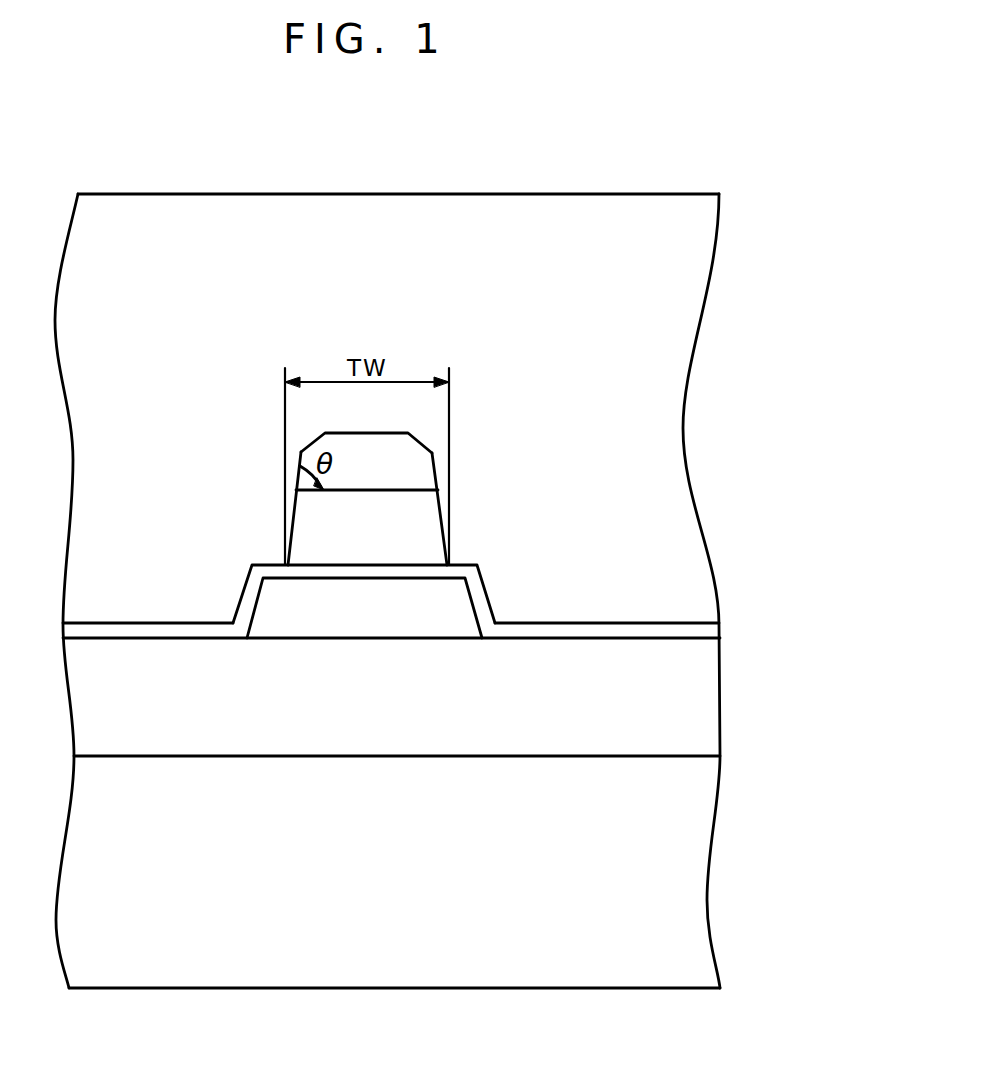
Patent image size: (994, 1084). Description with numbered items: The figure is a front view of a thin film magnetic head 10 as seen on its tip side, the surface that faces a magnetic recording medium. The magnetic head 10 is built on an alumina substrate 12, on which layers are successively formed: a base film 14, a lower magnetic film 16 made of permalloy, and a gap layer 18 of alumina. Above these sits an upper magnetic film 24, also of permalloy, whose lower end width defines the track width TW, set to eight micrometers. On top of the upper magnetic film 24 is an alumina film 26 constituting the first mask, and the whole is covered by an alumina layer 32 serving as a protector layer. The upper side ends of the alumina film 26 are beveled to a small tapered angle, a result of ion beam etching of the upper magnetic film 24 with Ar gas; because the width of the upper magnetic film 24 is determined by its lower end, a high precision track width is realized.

The thin film magnetic head 10 is at (647, 187).
The alumina substrate 12 is at (693, 845).
The base film 14 is at (708, 700).
The lower magnetic film 16 is at (427, 628).
The gap layer 18 is at (477, 588).
The upper magnetic film 24 is at (428, 527).
The alumina film 26 is at (425, 472).
The alumina layer 32 is at (694, 274).